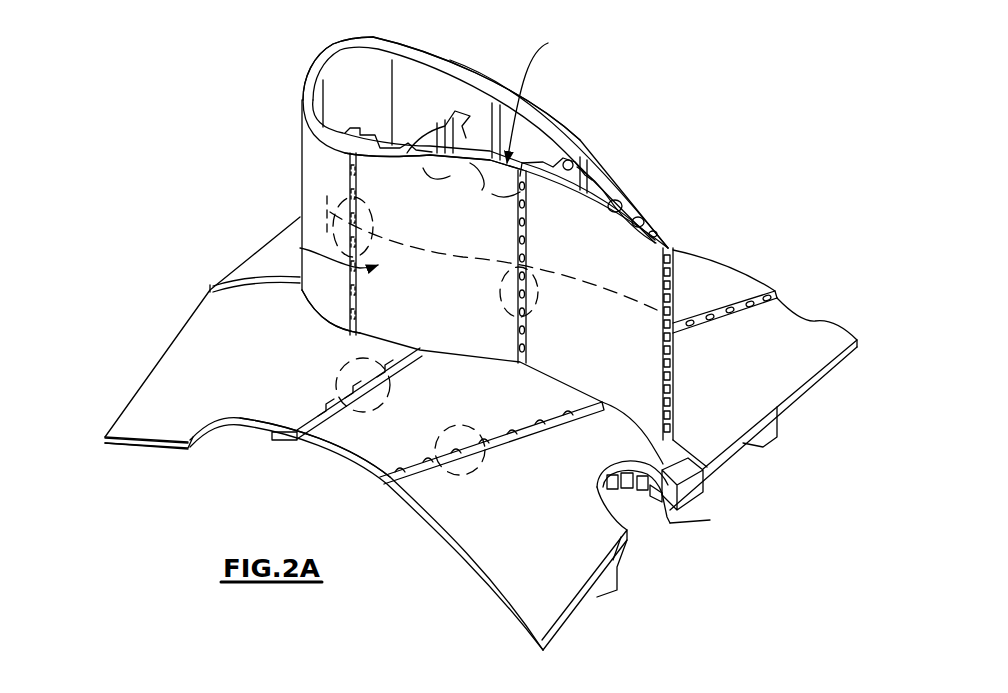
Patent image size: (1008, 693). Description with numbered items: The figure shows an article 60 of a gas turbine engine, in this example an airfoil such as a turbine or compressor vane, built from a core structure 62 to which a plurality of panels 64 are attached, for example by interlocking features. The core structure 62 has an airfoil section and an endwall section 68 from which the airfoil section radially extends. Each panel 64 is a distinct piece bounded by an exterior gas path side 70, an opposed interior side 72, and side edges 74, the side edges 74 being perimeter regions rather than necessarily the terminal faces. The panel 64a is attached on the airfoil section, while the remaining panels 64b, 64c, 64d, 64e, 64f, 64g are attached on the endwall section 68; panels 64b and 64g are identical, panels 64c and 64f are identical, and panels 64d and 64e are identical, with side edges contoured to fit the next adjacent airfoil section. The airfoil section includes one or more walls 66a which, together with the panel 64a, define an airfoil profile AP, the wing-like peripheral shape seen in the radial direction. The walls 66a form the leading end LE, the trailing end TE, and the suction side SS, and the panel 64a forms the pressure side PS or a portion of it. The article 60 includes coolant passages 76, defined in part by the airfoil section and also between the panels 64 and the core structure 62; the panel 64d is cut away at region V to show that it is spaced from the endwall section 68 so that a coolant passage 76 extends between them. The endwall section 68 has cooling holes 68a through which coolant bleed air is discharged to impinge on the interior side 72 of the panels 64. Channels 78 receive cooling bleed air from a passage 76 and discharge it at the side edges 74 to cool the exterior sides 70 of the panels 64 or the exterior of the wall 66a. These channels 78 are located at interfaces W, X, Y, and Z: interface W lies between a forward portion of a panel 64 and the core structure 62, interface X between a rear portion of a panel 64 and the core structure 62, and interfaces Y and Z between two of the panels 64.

The article 60 is at (138, 498).
The core structure 62 is at (530, 100).
The panels 64 is at (727, 287).
The panel 64a is at (577, 167).
The panel 64b is at (160, 383).
The panel 64c is at (490, 420).
The panel 64d is at (570, 563).
The panel 64e is at (753, 387).
The panel 64f is at (685, 275).
The panel 64g is at (287, 242).
The wall 66a is at (433, 60).
The endwall section 68 is at (663, 510).
The cooling holes 68a is at (633, 490).
The exterior gas path side 70 is at (447, 215).
The interior side 72 is at (478, 157).
The side edges 74 is at (105, 487).
The coolant passages 76 is at (362, 97).
The channels 78 is at (527, 340).
The leading end LE is at (297, 88).
The trailing end TE is at (676, 361).
The suction side SS is at (573, 130).
The pressure side PS is at (278, 245).
The airfoil profile AP is at (327, 215).
The interface W is at (372, 208).
The interface X is at (538, 312).
The interface Y is at (393, 380).
The interface Z is at (470, 420).
The region V is at (669, 462).